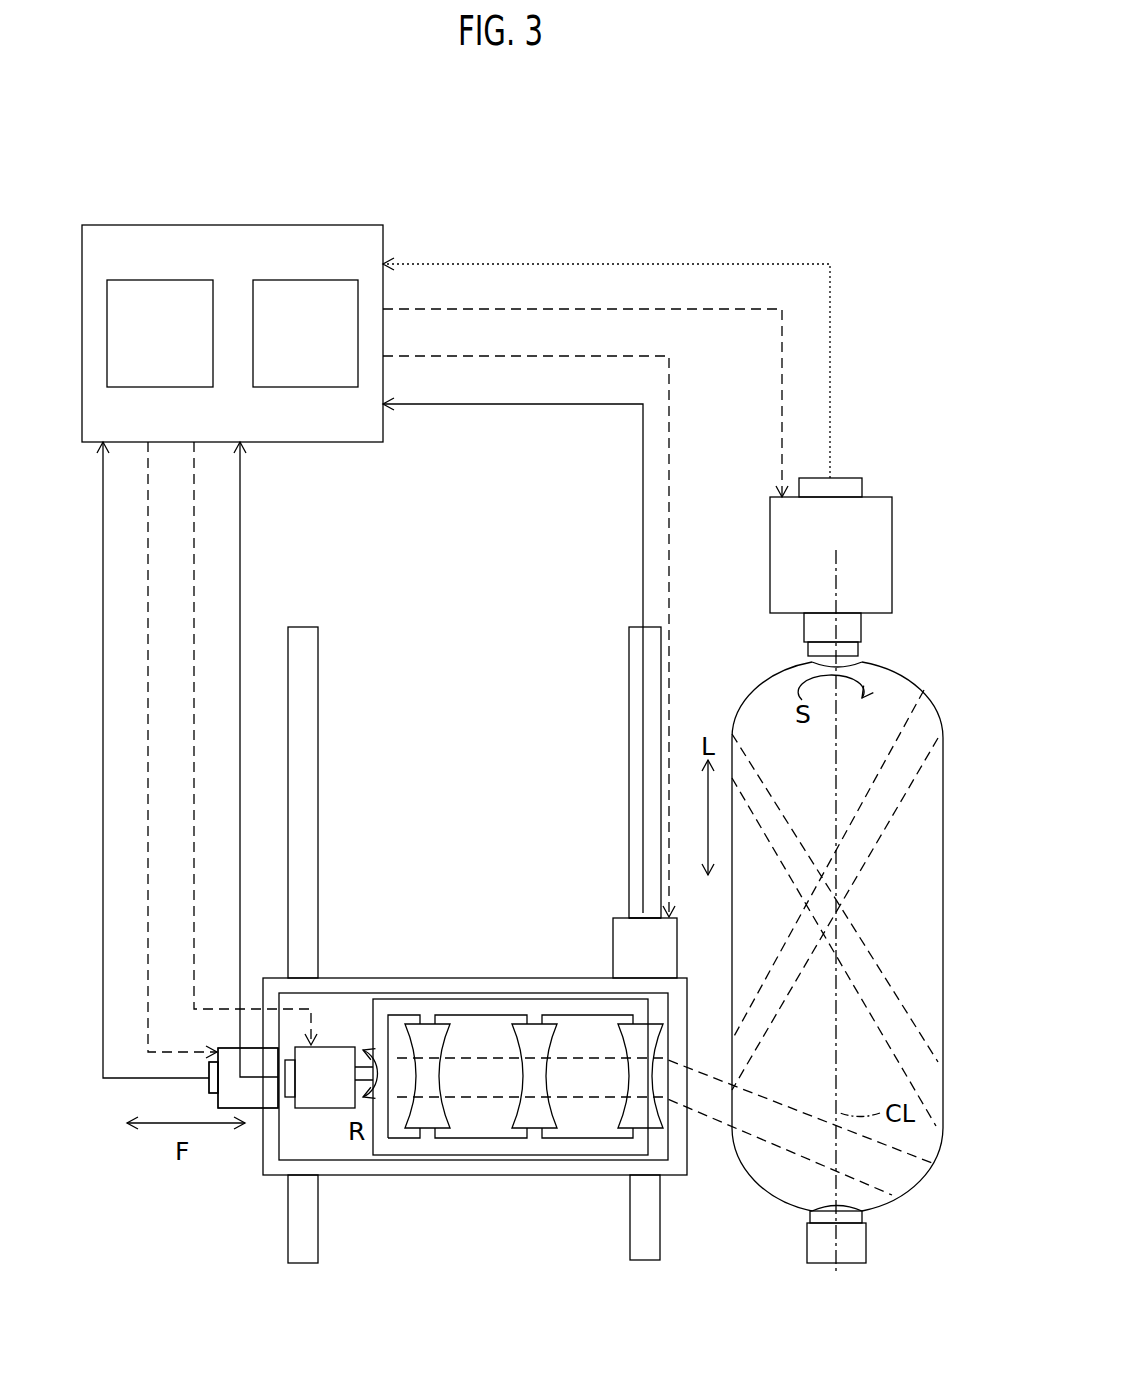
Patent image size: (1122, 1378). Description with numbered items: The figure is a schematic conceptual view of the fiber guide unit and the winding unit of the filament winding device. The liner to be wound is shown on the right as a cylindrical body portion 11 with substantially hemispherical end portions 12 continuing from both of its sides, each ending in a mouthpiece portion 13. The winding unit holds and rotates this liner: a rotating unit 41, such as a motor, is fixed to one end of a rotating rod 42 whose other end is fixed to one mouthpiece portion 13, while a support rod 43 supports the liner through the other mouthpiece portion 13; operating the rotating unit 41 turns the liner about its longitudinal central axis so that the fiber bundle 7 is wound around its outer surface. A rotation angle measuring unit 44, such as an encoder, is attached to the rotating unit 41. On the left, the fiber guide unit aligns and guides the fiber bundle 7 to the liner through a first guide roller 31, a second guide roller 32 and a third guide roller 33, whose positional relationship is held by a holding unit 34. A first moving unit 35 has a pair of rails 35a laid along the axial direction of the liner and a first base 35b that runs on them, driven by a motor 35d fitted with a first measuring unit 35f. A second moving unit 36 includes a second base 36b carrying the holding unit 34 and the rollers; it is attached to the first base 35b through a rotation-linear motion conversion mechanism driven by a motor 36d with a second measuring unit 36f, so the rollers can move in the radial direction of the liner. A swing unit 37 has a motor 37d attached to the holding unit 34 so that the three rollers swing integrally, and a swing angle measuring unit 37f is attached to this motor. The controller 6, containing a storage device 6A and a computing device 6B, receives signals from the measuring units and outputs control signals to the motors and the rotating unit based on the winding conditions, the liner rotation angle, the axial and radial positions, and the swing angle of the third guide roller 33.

The controller 6 is at (104, 244).
The storage device 6A is at (157, 292).
The computing device 6B is at (285, 297).
The fiber bundle 7 is at (933, 1100).
The cylindrical body portion 11 is at (923, 928).
The end portion 12 is at (897, 693).
The mouthpiece portion 13 is at (847, 648).
The first guide roller 31 is at (427, 1113).
The second guide roller 32 is at (535, 1118).
The third guide roller 33 is at (642, 1117).
The holding unit 34 is at (577, 1147).
The first moving unit 35 is at (517, 613).
The rails 35a is at (318, 740).
The first base 35b is at (445, 985).
The motor 35d is at (627, 938).
The first measuring unit 35f is at (630, 913).
The second moving unit 36 is at (190, 1085).
The second base 36b is at (325, 1150).
The motor 36d is at (253, 1102).
The second measuring unit 36f is at (215, 1088).
The swing unit 37 is at (335, 928).
The motor 37d is at (323, 1060).
The swing angle measuring unit 37f is at (288, 1083).
The rotating unit 41 is at (888, 540).
The rotating rod 42 is at (853, 627).
The support rod 43 is at (860, 1253).
The rotation angle measuring unit 44 is at (862, 488).